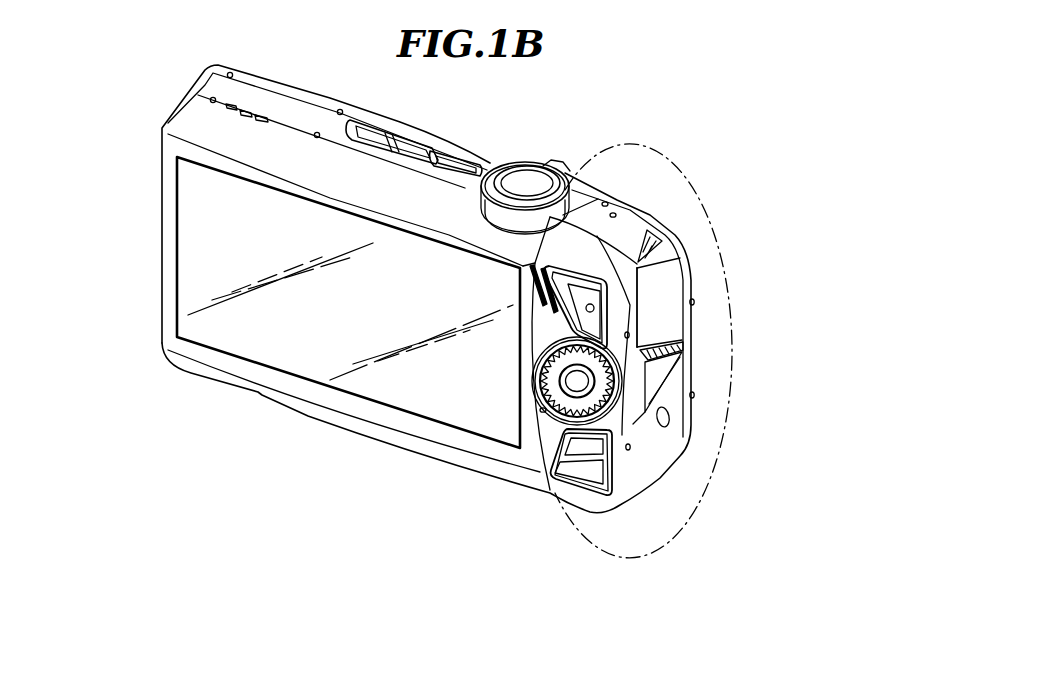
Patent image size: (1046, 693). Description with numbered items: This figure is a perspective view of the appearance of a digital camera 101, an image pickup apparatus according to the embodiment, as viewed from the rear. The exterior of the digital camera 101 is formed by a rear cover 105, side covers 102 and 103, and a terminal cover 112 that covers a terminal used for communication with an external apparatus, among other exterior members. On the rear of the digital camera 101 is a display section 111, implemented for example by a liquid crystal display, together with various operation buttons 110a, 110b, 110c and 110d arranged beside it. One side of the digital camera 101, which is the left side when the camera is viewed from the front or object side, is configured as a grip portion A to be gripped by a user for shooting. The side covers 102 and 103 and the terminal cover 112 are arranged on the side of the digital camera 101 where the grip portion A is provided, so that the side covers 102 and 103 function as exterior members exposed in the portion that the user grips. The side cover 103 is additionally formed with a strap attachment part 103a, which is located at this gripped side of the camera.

The digital camera 101 is at (447, 119).
The side cover 102 is at (653, 452).
The side cover 103 is at (687, 387).
The strap attachment part 103a is at (673, 353).
The rear cover 105 is at (203, 123).
The operation button 110a is at (595, 298).
The operation button 110b is at (613, 397).
The operation button 110c is at (622, 435).
The operation button 110d is at (570, 475).
The display section 111 is at (218, 217).
The terminal cover 112 is at (677, 293).
The grip portion A is at (695, 183).